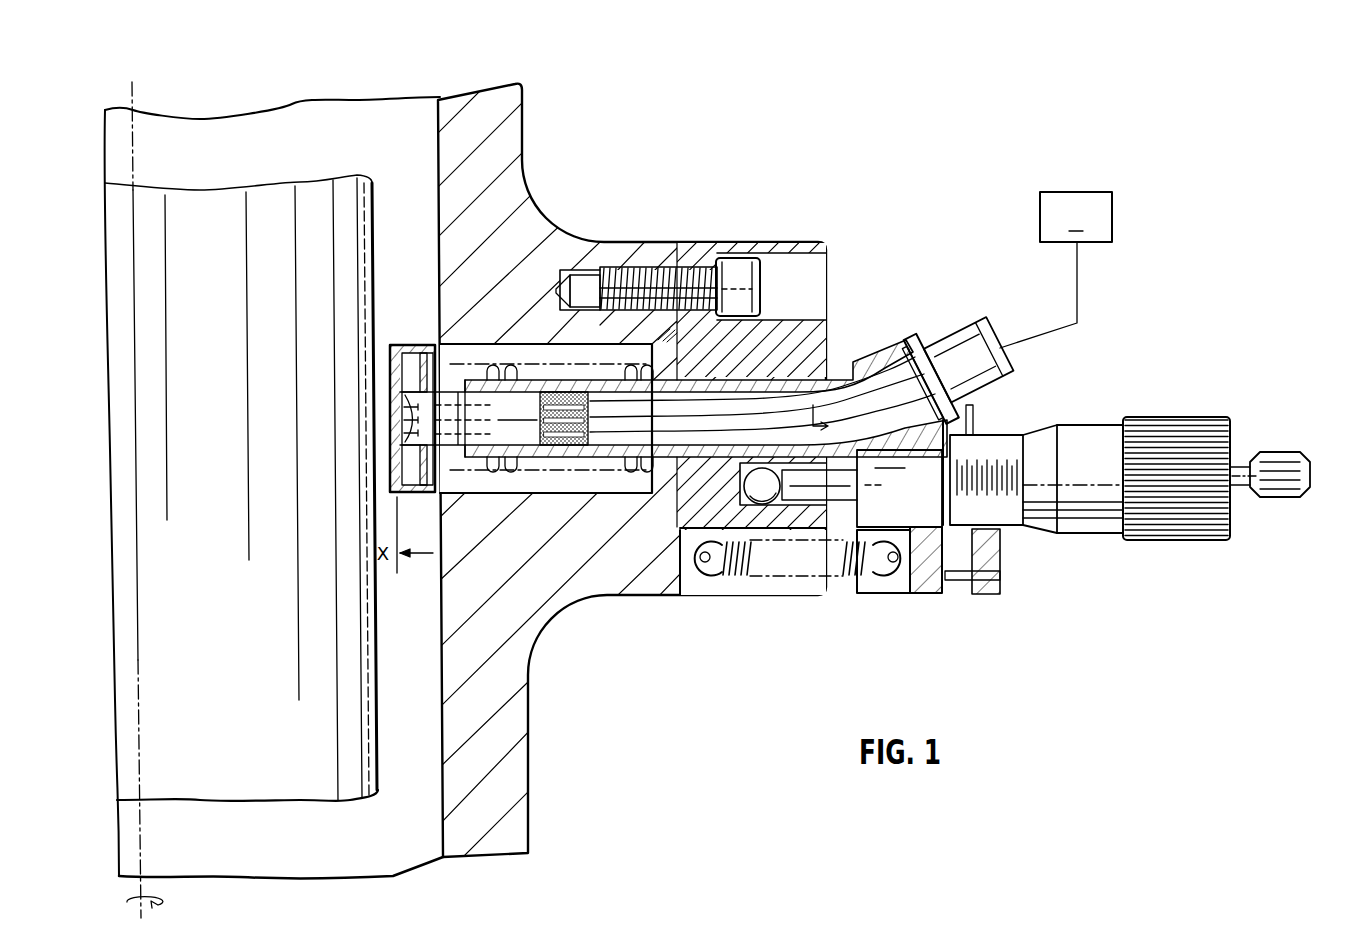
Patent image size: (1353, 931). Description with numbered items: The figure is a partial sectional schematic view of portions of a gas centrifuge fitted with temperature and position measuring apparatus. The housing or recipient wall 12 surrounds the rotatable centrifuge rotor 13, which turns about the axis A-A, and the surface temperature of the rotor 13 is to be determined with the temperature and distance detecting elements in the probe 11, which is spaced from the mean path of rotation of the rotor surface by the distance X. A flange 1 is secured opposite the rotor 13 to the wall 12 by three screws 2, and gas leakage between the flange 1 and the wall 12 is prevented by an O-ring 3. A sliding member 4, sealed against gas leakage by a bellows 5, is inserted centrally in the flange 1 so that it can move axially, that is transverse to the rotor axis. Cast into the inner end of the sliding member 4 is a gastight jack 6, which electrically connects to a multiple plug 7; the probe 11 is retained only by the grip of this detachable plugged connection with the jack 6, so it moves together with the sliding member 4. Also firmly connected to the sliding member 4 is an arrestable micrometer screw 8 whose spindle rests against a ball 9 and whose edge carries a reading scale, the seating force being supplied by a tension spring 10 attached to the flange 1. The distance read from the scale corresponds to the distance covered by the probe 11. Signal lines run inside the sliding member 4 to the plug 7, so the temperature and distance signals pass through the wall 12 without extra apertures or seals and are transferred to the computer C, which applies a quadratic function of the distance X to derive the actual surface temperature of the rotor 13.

The flange 1 is at (695, 252).
The screws 2 is at (744, 276).
The O-ring 3 is at (660, 502).
The sliding member 4 is at (883, 378).
The bellows 5 is at (627, 378).
The gastight jack 6 is at (525, 400).
The multiple plug 7 is at (964, 352).
The micrometer screw 8 is at (1085, 438).
The ball 9 is at (748, 483).
The tension spring 10 is at (740, 578).
The probe 11 is at (412, 475).
The recipient wall 12 is at (507, 733).
The centrifuge rotor 13 is at (240, 780).